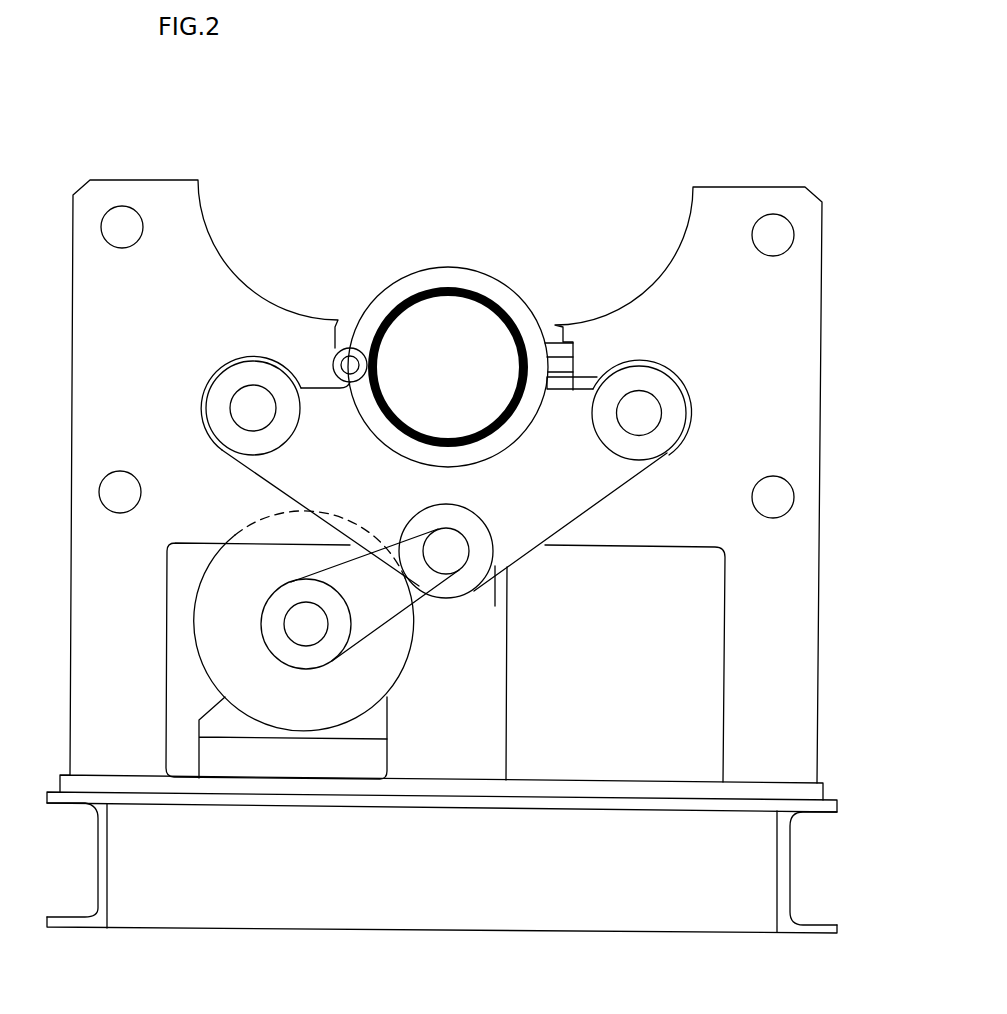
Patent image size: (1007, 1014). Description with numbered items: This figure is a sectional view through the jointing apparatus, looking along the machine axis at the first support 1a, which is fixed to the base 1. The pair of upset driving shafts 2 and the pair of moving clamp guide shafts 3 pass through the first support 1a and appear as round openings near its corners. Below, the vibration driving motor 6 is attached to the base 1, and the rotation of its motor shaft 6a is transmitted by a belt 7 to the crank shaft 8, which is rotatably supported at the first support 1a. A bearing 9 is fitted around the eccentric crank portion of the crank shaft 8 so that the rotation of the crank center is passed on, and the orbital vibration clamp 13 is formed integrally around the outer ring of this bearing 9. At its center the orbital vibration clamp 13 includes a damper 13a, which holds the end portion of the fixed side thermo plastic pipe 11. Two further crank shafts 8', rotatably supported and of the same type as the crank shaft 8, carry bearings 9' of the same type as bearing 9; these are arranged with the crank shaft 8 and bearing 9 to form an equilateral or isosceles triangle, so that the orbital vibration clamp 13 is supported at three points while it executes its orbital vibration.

The base 1 is at (608, 926).
The first support 1a is at (823, 346).
The upset driving shaft 2 is at (788, 220).
The moving clamp guide shaft 3 is at (138, 211).
The vibration driving motor 6 is at (203, 663).
The motor shaft 6a is at (262, 607).
The belt 7 is at (378, 634).
The crank shaft 8 is at (610, 663).
The crank shaft 8' is at (434, 422).
The bearing 9 is at (477, 551).
The bearing 9' is at (462, 384).
The fixed side thermo plastic pipe 11 is at (512, 314).
The orbital vibration clamp 13 is at (575, 520).
The damper 13a is at (385, 300).